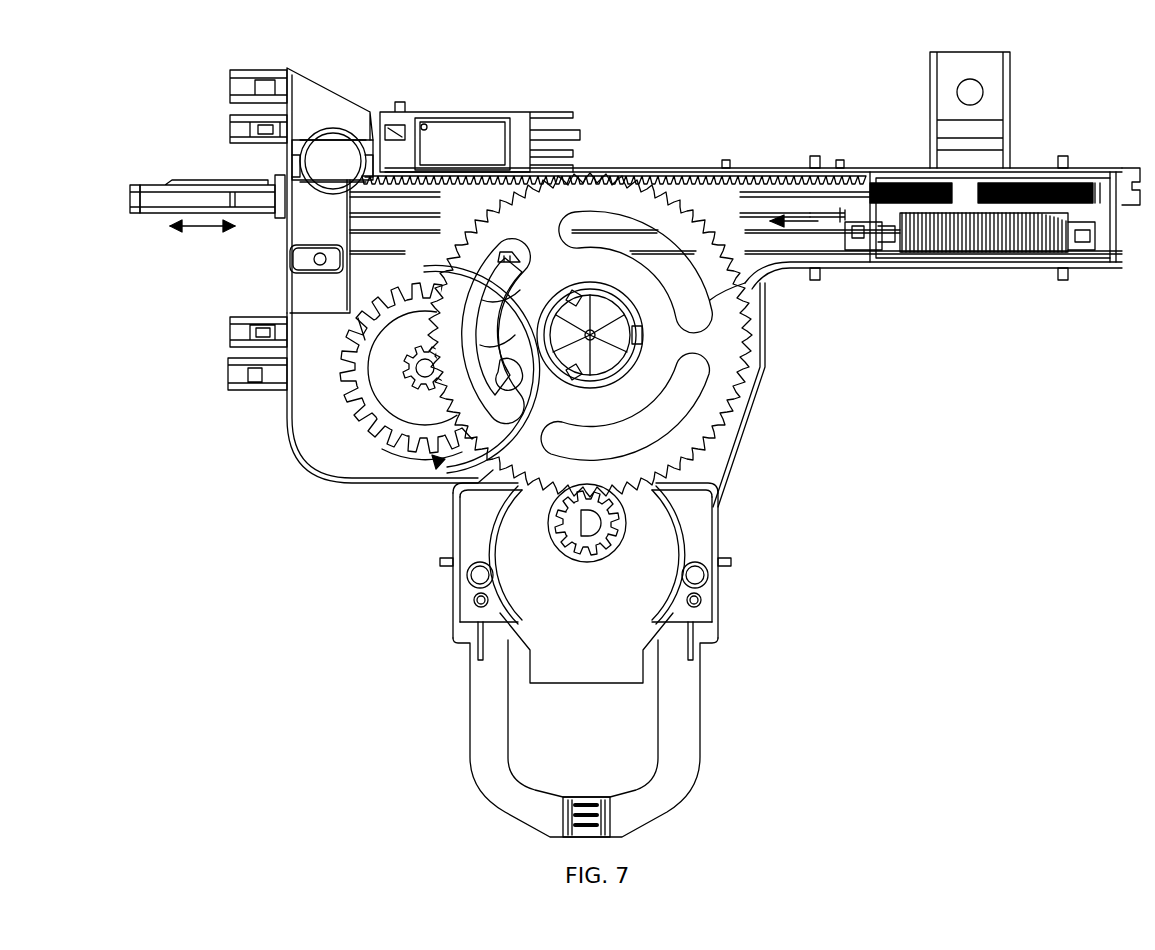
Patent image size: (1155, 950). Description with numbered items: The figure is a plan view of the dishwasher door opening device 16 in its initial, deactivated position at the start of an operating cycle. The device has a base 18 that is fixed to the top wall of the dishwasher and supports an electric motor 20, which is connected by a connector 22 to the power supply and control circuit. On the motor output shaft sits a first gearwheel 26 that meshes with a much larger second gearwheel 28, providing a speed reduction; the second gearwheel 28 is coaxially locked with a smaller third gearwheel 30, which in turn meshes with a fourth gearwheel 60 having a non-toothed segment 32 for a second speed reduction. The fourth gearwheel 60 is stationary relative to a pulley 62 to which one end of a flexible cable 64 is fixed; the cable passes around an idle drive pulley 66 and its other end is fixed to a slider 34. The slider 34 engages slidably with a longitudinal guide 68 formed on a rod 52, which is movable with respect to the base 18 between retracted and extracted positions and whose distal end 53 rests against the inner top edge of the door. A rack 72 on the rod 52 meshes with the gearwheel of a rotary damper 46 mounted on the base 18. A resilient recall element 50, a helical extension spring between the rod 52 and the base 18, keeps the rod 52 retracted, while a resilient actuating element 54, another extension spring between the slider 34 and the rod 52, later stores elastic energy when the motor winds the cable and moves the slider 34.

The opening device 16 is at (894, 474).
The base 18 is at (758, 430).
The electric motor 20 is at (689, 537).
The connector 22 is at (460, 140).
The first gearwheel 26 is at (580, 550).
The second gearwheel 28 is at (698, 430).
The third gearwheel 30 is at (538, 380).
The non-toothed segment 32 is at (500, 315).
The slider 34 is at (858, 248).
The rotary damper 46 is at (350, 157).
The resilient recall element 50 is at (1020, 190).
The rod 52 is at (208, 174).
The distal end 53 is at (135, 192).
The resilient actuating element 54 is at (990, 232).
The fourth gearwheel 60 is at (380, 437).
The pulley 62 is at (343, 427).
The flexible cable 64 is at (383, 230).
The idle drive pulley 66 is at (360, 272).
The longitudinal guide 68 is at (822, 213).
The rack 72 is at (697, 176).